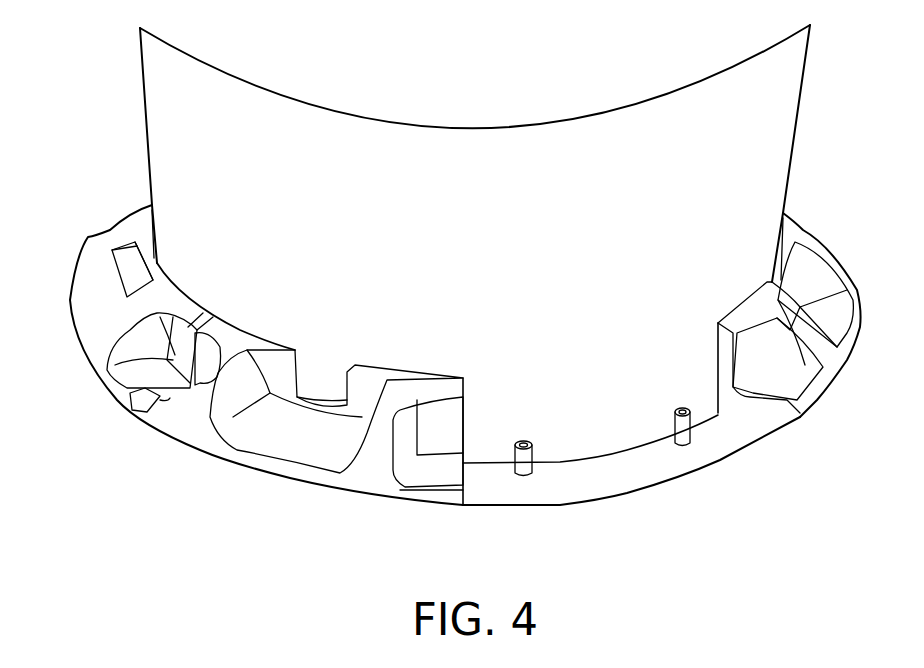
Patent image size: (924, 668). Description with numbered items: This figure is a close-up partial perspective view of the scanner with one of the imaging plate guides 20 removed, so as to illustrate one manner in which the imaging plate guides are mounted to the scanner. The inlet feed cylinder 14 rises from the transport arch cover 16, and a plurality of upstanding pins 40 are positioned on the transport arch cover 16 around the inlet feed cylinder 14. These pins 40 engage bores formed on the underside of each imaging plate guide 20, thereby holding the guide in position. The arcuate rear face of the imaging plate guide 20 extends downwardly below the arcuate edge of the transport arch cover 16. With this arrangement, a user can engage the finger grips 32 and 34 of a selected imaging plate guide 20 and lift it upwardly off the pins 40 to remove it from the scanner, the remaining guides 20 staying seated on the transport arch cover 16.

The inlet feed cylinder 14 is at (494, 236).
The transport arch cover 16 is at (592, 483).
The imaging plate guide 20 is at (83, 323).
The finger grip 32 is at (140, 418).
The finger grip 34 is at (438, 470).
The upstanding pins 40 is at (523, 467).